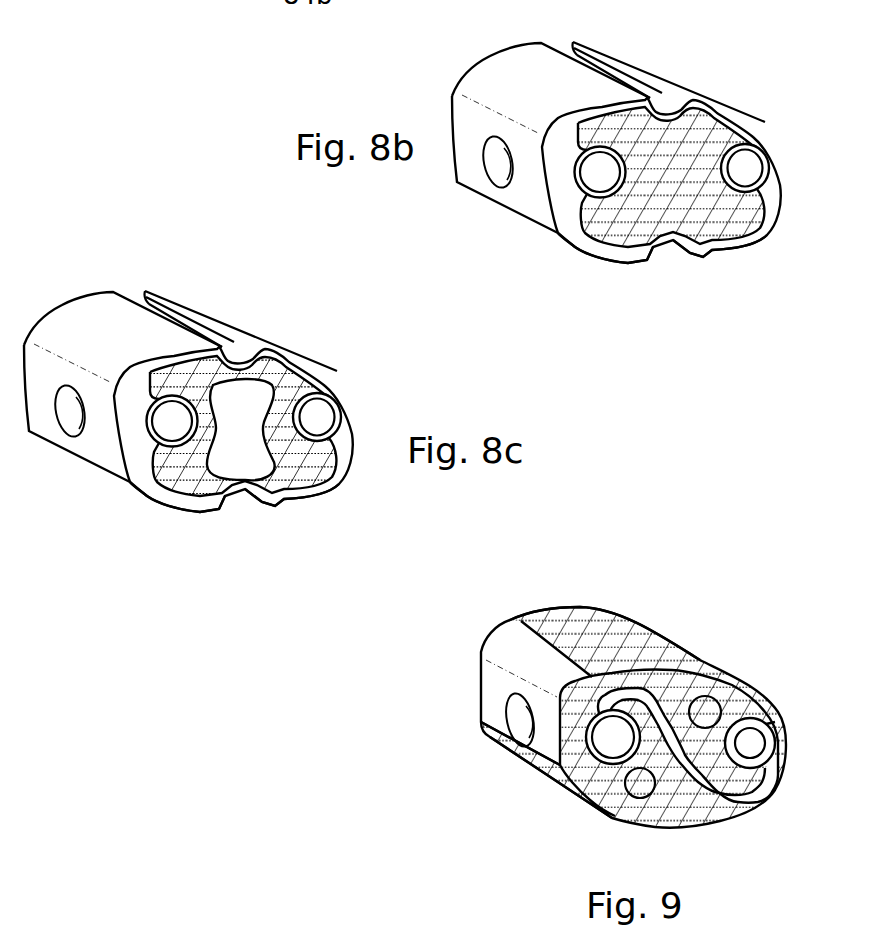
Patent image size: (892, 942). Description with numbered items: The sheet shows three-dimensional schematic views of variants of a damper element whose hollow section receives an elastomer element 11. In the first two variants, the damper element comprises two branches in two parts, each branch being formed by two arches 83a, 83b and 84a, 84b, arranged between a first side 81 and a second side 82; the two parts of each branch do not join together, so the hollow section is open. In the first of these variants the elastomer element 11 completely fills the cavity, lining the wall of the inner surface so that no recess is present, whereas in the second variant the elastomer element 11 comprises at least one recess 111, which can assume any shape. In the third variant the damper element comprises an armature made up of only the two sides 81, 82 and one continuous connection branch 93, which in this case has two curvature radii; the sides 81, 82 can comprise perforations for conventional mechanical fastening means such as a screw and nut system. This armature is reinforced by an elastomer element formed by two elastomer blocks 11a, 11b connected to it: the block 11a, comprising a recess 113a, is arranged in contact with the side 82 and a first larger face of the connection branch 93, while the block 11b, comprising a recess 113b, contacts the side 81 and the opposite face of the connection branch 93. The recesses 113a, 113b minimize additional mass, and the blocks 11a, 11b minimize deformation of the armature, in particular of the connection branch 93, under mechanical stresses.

In FIG. 8B, the elastomer element 11 is at (707, 100).
In FIG. 8C, the elastomer element 11 is at (244, 392).
In FIG. 9, the elastomer block 11a is at (612, 657).
In FIG. 9, the elastomer block 11b is at (593, 793).
In FIG. 8B, the first side 81 is at (487, 193).
In FIG. 8C, the first side 81 is at (74, 430).
In FIG. 9, the first side 81 is at (490, 683).
In FIG. 8B, the second side 82 is at (780, 160).
In FIG. 8C, the second side 82 is at (268, 429).
In FIG. 9, the second side 82 is at (771, 750).
In FIG. 8B, the arch 83a is at (493, 68).
In FIG. 8C, the arch 83a is at (123, 294).
In FIG. 8B, the arch 83b is at (633, 57).
In FIG. 8C, the arch 83b is at (241, 306).
In FIG. 8B, the arch 84a is at (597, 253).
In FIG. 8C, the arch 84a is at (166, 527).
In FIG. 8B, the arch 84b is at (733, 250).
In FIG. 8C, the arch 84b is at (292, 528).
In FIG. 9, the connection branch 93 is at (667, 662).
In FIG. 8C, the recess 111 is at (241, 477).
In FIG. 9, the recess 113a is at (715, 712).
In FIG. 9, the recess 113b is at (642, 783).